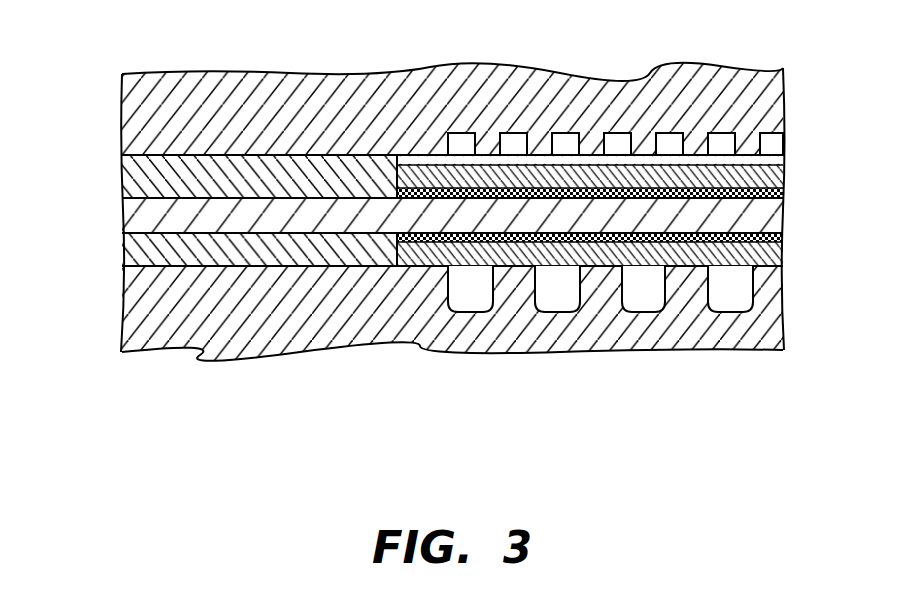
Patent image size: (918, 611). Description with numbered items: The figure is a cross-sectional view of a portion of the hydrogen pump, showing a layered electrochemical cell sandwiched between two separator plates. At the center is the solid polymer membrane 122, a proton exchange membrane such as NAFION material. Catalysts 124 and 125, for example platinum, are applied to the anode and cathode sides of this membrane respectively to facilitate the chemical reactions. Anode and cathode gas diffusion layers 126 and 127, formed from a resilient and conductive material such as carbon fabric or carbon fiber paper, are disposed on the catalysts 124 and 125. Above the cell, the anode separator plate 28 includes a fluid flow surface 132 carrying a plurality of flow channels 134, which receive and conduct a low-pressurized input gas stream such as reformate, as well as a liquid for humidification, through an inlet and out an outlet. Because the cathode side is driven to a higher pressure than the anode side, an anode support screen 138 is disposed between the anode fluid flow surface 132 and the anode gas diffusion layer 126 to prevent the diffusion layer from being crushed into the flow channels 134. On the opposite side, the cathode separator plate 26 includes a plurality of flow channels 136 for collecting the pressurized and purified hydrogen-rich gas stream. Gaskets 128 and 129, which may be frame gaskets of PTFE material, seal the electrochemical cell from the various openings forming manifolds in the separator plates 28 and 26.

The cathode separator plate 26 is at (622, 88).
The anode separator plate 28 is at (618, 335).
The solid polymer membrane 122 is at (783, 218).
The catalyst 124 is at (783, 192).
The catalyst 125 is at (783, 237).
The anode gas diffusion layer 126 is at (783, 178).
The cathode gas diffusion layer 127 is at (783, 256).
The gasket 128 is at (122, 178).
The gasket 129 is at (122, 251).
The fluid flow surface 132 is at (621, 153).
The flow channels 134 is at (564, 126).
The flow channels 136 is at (557, 322).
The anode support screen 138 is at (783, 160).